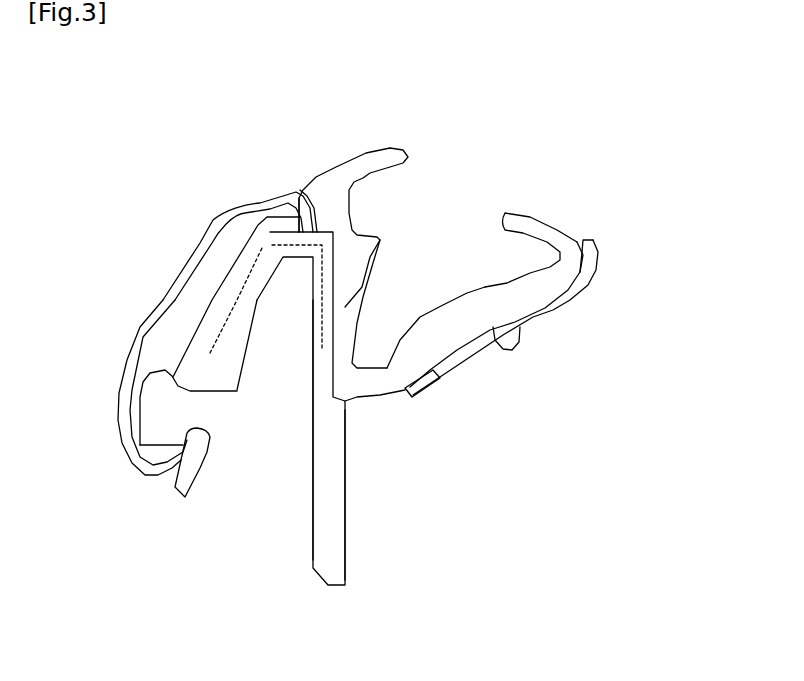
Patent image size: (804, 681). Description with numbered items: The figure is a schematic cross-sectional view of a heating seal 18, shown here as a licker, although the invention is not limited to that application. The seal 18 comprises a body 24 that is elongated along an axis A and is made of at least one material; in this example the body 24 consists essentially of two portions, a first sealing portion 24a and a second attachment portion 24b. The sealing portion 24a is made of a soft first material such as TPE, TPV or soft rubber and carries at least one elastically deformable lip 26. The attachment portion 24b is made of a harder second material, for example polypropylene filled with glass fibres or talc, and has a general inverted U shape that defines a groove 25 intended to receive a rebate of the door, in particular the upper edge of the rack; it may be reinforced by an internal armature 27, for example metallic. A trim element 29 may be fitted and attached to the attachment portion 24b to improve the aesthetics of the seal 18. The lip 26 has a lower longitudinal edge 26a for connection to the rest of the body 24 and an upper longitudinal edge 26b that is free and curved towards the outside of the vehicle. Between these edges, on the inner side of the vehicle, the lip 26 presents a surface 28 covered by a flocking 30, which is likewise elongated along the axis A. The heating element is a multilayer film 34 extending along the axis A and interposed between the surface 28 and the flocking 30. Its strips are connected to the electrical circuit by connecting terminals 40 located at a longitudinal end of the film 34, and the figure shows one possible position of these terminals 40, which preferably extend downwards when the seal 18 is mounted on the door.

The seal 18 is at (623, 158).
The body 24 is at (357, 557).
The sealing portion 24a is at (442, 307).
The attachment portion 24b is at (349, 491).
The groove 25 is at (238, 326).
The lip 26 is at (574, 223).
The lower longitudinal edge 26a is at (380, 395).
The upper longitudinal edge 26b is at (543, 217).
The internal armature 27 is at (243, 294).
The surface 28 is at (513, 333).
The trim element 29 is at (138, 352).
The flocking 30 is at (572, 307).
The multilayer film 34 is at (582, 287).
The connecting terminals 40 is at (415, 388).
The axis A is at (380, 240).